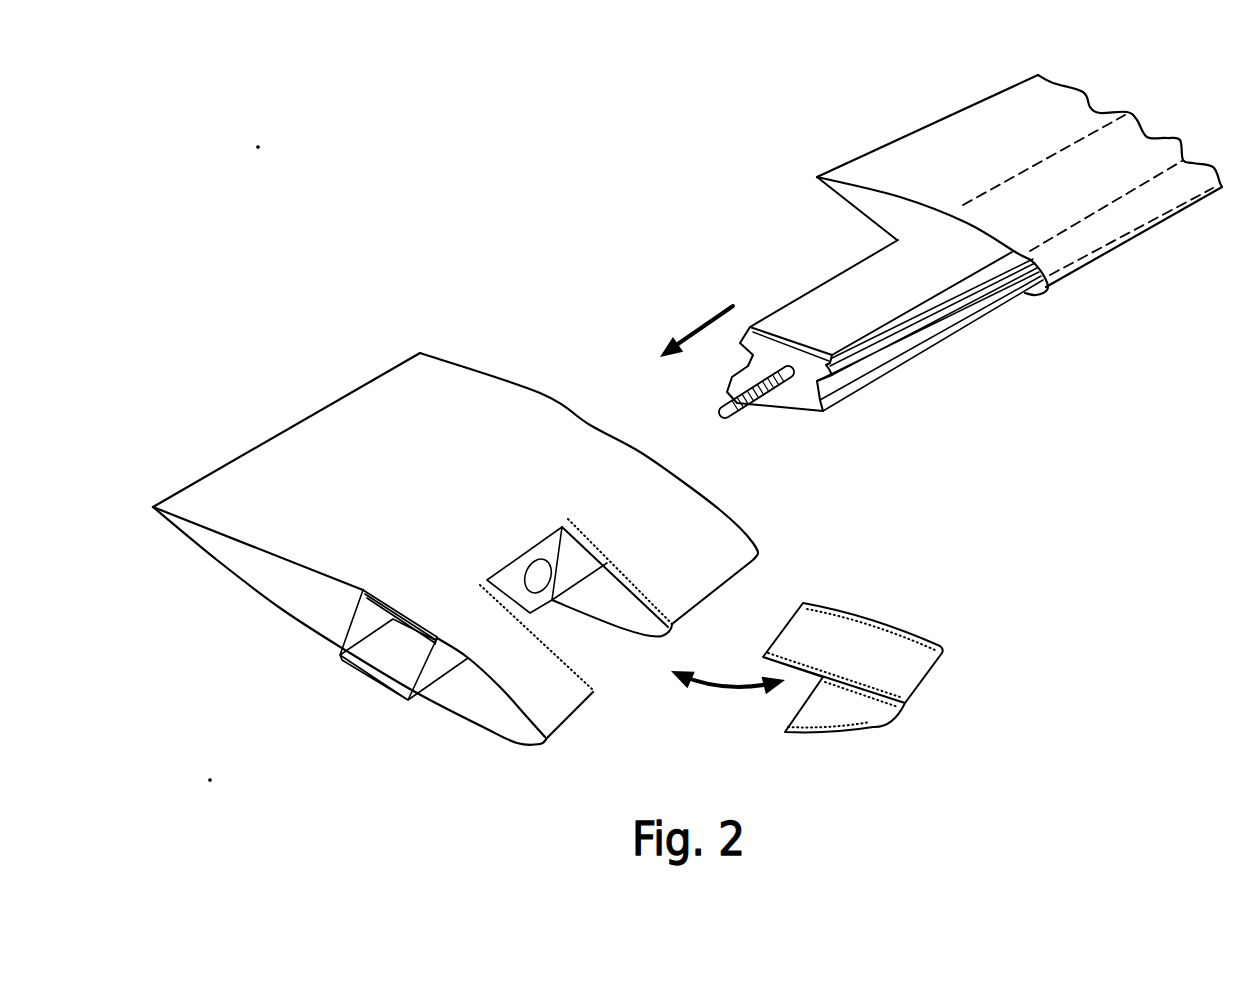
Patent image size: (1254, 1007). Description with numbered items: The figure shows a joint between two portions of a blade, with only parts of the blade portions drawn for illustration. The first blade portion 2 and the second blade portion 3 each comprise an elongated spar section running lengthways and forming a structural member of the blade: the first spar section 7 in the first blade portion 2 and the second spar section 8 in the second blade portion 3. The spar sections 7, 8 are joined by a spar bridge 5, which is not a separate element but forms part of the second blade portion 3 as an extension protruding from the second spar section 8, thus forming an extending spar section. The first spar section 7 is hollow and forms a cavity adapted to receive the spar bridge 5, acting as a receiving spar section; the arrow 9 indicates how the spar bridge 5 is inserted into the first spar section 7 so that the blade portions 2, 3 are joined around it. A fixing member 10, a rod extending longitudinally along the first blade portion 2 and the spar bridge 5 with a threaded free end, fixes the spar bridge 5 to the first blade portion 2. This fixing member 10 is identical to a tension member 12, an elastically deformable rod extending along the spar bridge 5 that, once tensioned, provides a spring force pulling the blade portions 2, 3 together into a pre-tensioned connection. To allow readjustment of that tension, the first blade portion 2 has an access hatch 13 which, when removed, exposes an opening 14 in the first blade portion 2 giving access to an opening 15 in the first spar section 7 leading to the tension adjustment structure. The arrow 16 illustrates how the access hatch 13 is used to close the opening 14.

The first blade portion 2 is at (333, 440).
The second blade portion 3 is at (978, 135).
The spar bridge 5 is at (888, 282).
The first spar section 7 is at (392, 662).
The second spar section 8 is at (1133, 147).
The arrow 9 is at (677, 337).
The fixing member 10 is at (802, 431).
The tension member 12 is at (760, 407).
The access hatch 13 is at (900, 660).
The opening 14 is at (634, 686).
The opening 15 is at (532, 578).
The arrow 16 is at (724, 690).